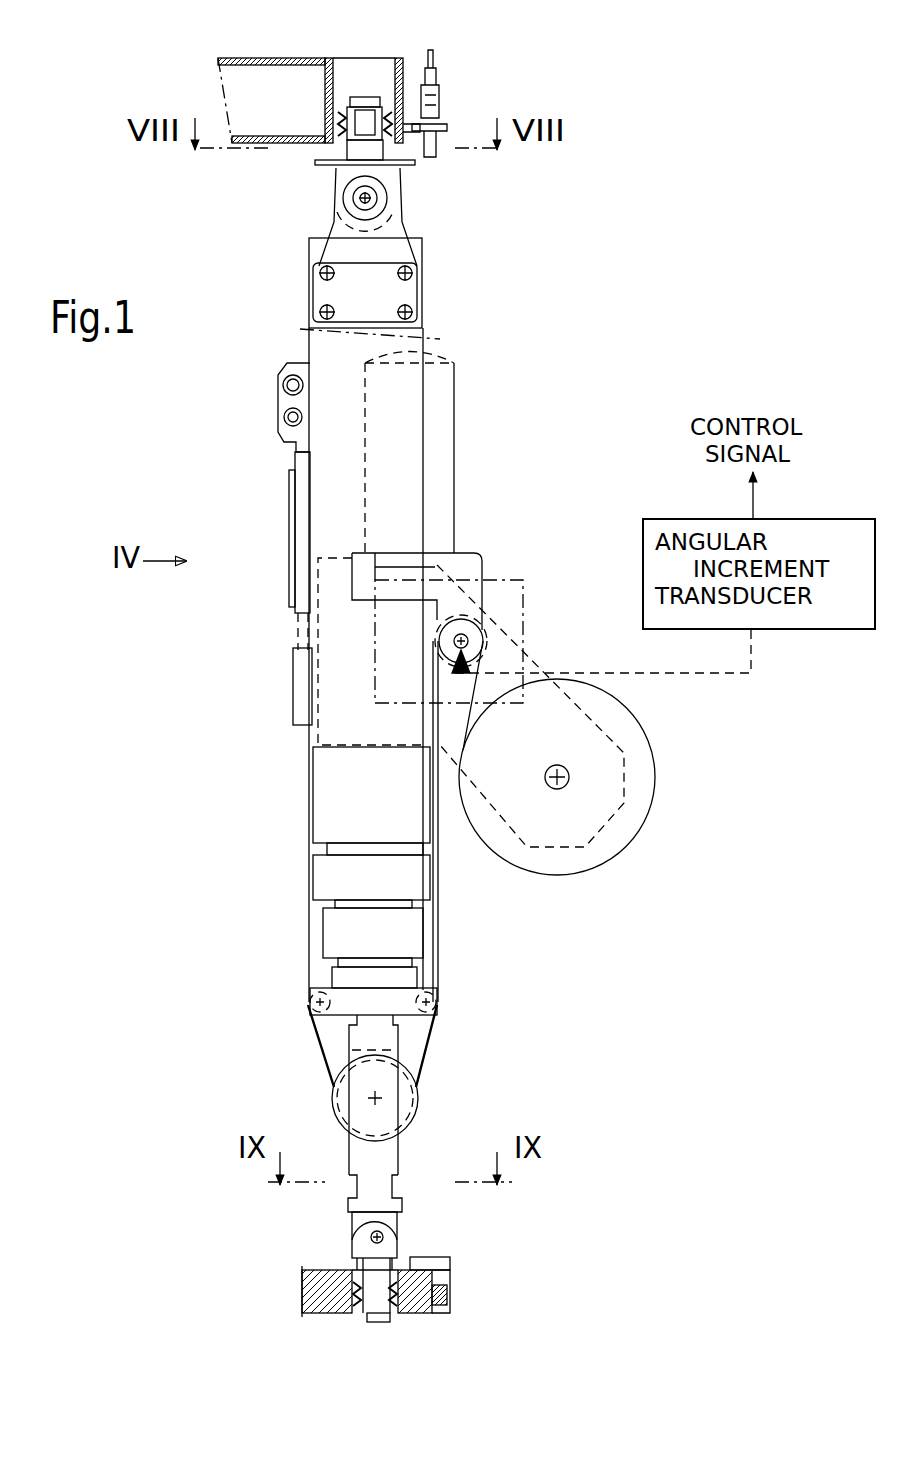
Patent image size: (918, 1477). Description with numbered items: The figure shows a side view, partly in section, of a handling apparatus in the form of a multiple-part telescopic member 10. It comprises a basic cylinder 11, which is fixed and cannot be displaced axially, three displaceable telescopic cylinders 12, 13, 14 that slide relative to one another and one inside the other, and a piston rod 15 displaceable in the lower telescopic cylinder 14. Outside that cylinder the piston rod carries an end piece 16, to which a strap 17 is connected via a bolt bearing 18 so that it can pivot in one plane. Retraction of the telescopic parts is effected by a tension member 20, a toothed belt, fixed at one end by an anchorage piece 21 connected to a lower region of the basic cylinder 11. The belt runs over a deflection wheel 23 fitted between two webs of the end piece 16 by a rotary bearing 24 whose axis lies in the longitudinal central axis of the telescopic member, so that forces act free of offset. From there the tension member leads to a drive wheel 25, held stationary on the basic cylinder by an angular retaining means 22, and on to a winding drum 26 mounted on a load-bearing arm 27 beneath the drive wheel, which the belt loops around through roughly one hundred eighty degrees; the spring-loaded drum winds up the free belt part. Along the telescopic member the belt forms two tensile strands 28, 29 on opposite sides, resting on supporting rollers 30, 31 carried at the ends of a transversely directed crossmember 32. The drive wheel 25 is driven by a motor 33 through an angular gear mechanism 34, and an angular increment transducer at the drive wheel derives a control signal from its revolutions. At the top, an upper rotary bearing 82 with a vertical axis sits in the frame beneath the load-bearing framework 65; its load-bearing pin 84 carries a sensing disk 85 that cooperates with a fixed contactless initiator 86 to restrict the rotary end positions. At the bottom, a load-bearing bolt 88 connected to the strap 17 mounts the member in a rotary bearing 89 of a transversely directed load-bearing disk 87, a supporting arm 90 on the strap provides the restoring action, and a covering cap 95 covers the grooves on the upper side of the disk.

The telescopic member 10 is at (556, 452).
The basic cylinder 11 is at (430, 296).
The telescopic cylinder 12 is at (440, 848).
The telescopic cylinder 13 is at (432, 905).
The telescopic cylinder 14 is at (425, 965).
The piston rod 15 is at (330, 1083).
The end piece 16 is at (345, 1138).
The strap 17 is at (365, 1262).
The bolt bearing 18 is at (383, 1237).
The tension member 20 is at (300, 789).
The anchorage piece 21 is at (302, 493).
The retaining means 22 is at (465, 565).
The deflection wheel 23 is at (405, 1090).
The rotary bearing 24 is at (372, 1097).
The drive wheel 25 is at (485, 640).
The winding drum 26 is at (625, 728).
The load-bearing arm 27 is at (515, 675).
The strand 28 is at (303, 870).
The strand 29 is at (440, 805).
The supporting roller 30 is at (367, 1038).
The supporting roller 31 is at (434, 1004).
The crossmember 32 is at (373, 1000).
The motor 33 is at (440, 428).
The angular gear mechanism 34 is at (505, 595).
The load-bearing framework 65 is at (257, 52).
The rotary bearing 82 is at (366, 92).
The load-bearing pin 84 is at (360, 148).
The sensing disk 85 is at (405, 168).
The initiator 86 is at (442, 100).
The load-bearing disk 87 is at (318, 1300).
The load-bearing bolt 88 is at (378, 1297).
The rotary bearing 89 is at (366, 1305).
The supporting arm 90 is at (425, 1262).
The covering cap 95 is at (447, 1262).